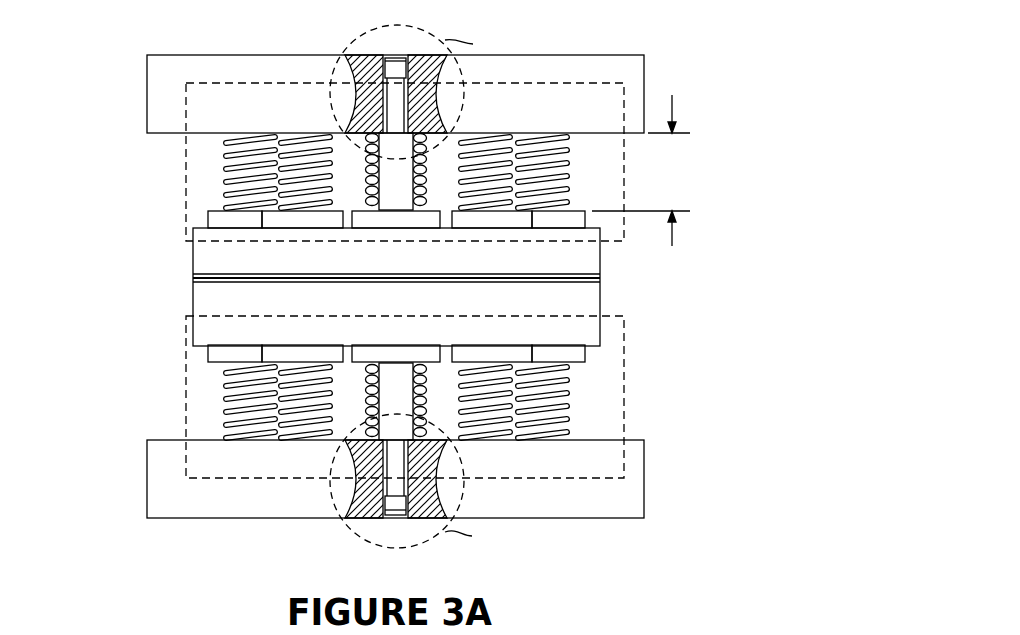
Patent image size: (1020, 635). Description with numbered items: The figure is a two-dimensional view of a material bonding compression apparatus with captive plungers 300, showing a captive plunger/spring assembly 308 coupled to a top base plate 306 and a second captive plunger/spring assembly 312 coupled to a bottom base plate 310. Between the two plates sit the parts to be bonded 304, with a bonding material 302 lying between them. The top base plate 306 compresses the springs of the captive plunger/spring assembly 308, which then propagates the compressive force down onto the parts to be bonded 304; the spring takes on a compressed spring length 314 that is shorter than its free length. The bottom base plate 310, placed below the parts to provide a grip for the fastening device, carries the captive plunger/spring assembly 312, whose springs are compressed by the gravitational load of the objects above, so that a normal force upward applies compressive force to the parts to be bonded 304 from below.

The material bonding compression apparatus with captive plungers 300 is at (422, 318).
The bonding material 302 is at (600, 275).
The parts to be bonded 304 is at (197, 301).
The top base plate 306 is at (157, 92).
The captive plunger/spring assembly 308 is at (612, 105).
The bottom base plate 310 is at (154, 472).
The captive plunger/spring assembly 312 is at (600, 381).
The compressed spring length 314 is at (691, 170).